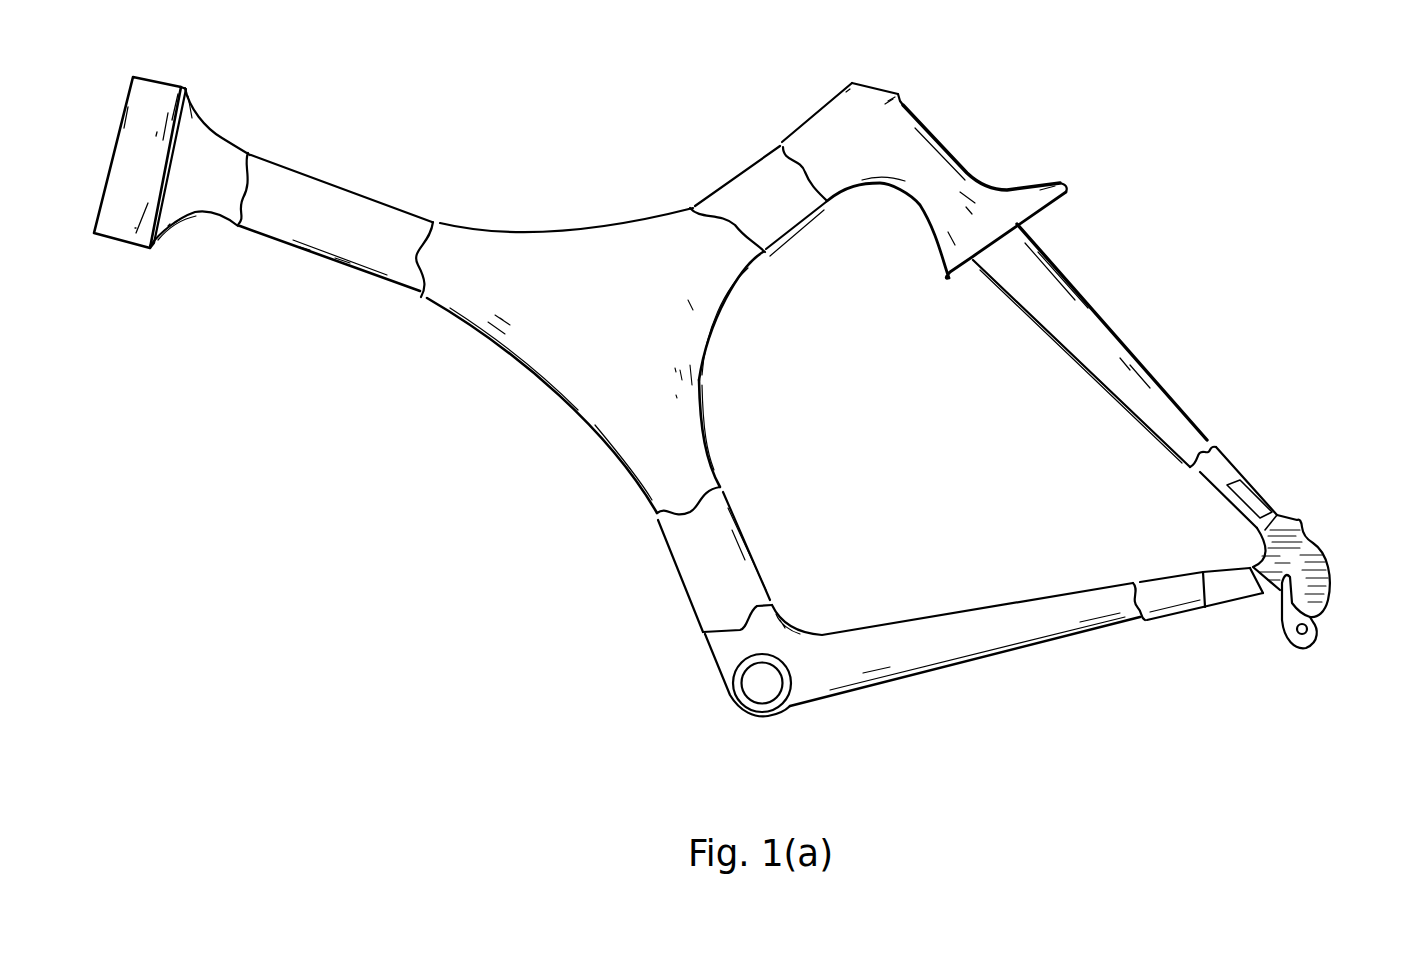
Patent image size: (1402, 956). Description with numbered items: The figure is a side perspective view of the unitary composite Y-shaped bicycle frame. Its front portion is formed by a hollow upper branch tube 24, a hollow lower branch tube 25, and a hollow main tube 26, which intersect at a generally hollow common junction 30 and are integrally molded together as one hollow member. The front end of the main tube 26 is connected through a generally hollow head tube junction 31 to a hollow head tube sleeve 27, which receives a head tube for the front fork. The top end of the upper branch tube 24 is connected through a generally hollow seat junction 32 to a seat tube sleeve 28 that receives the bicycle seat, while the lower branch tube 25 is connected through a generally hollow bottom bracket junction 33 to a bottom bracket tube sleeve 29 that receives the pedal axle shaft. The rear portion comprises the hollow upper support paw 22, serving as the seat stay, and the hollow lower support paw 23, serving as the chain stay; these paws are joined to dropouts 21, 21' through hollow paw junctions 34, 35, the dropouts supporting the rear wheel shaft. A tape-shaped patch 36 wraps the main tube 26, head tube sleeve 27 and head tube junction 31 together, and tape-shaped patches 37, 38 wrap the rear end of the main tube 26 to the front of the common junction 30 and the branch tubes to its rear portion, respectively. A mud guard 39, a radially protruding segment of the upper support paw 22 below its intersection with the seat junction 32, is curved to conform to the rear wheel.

The dropout 21 is at (1297, 635).
The dropout 21' is at (1322, 566).
The upper support paw 22 is at (1168, 390).
The lower support paw 23 is at (1120, 630).
The upper branch tube 24 is at (752, 161).
The lower branch tube 25 is at (714, 457).
The main tube 26 is at (392, 280).
The head tube sleeve 27 is at (182, 86).
The seat tube sleeve 28 is at (901, 101).
The bottom bracket tube sleeve 29 is at (742, 687).
The common junction 30 is at (588, 387).
The head tube junction 31 is at (205, 142).
The seat junction 32 is at (807, 127).
The bottom bracket junction 33 is at (712, 640).
The upper paw junction 34 is at (1188, 607).
The lower paw junction 35 is at (1240, 464).
The tape-shaped patch 36 is at (186, 218).
The tape-shaped patch 37 is at (707, 350).
The tape-shaped patch 38 is at (580, 223).
The mud guard 39 is at (1061, 183).